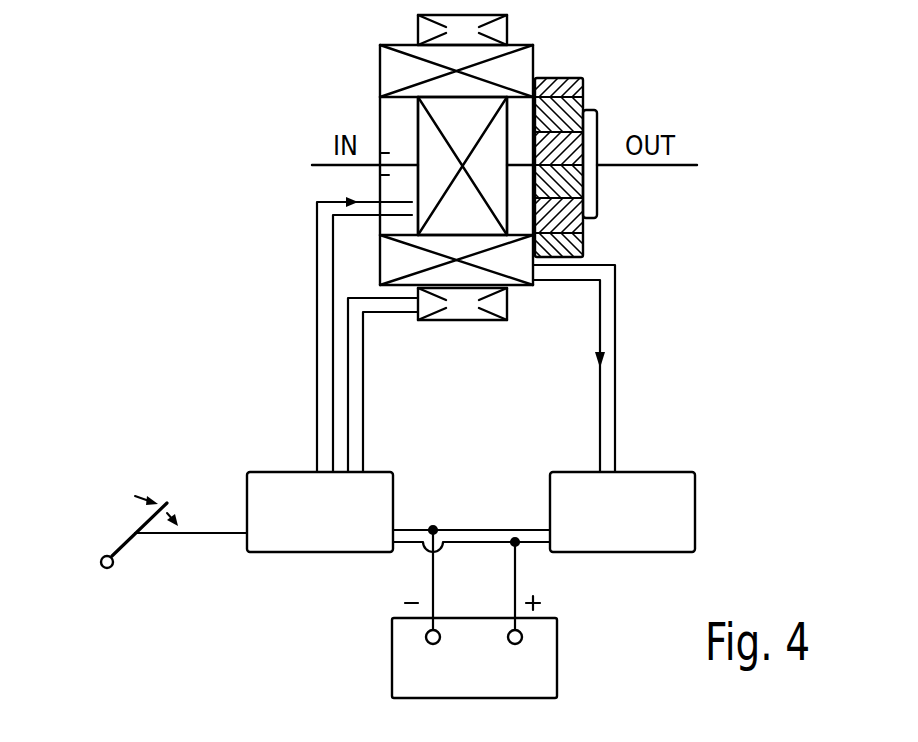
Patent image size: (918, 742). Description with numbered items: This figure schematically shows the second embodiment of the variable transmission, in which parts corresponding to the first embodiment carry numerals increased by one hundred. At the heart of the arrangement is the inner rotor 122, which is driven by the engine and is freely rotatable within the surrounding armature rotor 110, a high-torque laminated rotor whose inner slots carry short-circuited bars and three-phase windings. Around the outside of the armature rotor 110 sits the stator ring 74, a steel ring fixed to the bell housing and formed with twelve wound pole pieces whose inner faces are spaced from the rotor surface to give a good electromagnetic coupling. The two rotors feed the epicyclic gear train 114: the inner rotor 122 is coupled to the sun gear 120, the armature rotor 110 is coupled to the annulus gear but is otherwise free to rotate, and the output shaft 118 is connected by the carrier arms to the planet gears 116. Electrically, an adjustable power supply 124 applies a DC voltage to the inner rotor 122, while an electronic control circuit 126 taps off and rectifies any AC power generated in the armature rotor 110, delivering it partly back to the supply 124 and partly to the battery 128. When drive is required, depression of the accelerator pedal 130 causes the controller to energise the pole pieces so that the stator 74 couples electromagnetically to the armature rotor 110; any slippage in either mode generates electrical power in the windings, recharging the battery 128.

The stator ring 74 is at (418, 15).
The armature rotor 110 is at (380, 72).
The epicyclic gear train 114 is at (612, 128).
The planet gears 116 is at (583, 100).
The output shaft 118 is at (672, 167).
The sun gear 120 is at (586, 140).
The inner rotor 122 is at (425, 128).
The adjustable power supply 124 is at (340, 529).
The electronic control circuit 126 is at (642, 526).
The battery 128 is at (498, 683).
The accelerator pedal 130 is at (122, 546).